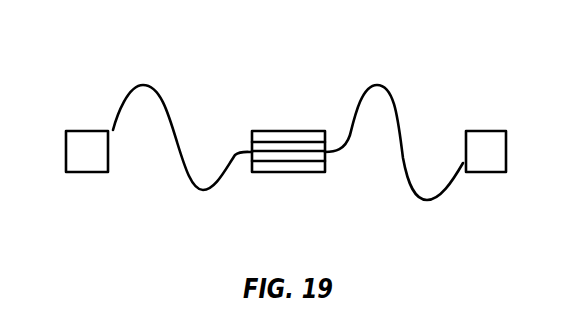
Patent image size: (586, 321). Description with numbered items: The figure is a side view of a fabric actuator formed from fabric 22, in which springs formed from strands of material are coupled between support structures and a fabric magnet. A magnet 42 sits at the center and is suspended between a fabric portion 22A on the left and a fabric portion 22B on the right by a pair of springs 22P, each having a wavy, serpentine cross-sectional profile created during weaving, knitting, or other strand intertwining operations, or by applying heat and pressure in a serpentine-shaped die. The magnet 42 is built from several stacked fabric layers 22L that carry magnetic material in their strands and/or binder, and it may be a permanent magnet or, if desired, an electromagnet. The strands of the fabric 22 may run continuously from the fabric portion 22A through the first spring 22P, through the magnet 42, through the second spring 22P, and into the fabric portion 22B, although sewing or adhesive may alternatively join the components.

The fabric 22 is at (522, 62).
The fabric portion 22A is at (86, 160).
The fabric portion 22B is at (486, 160).
The spring 22P is at (253, 213).
The fabric layer 22L is at (280, 163).
The magnet 42 is at (325, 115).